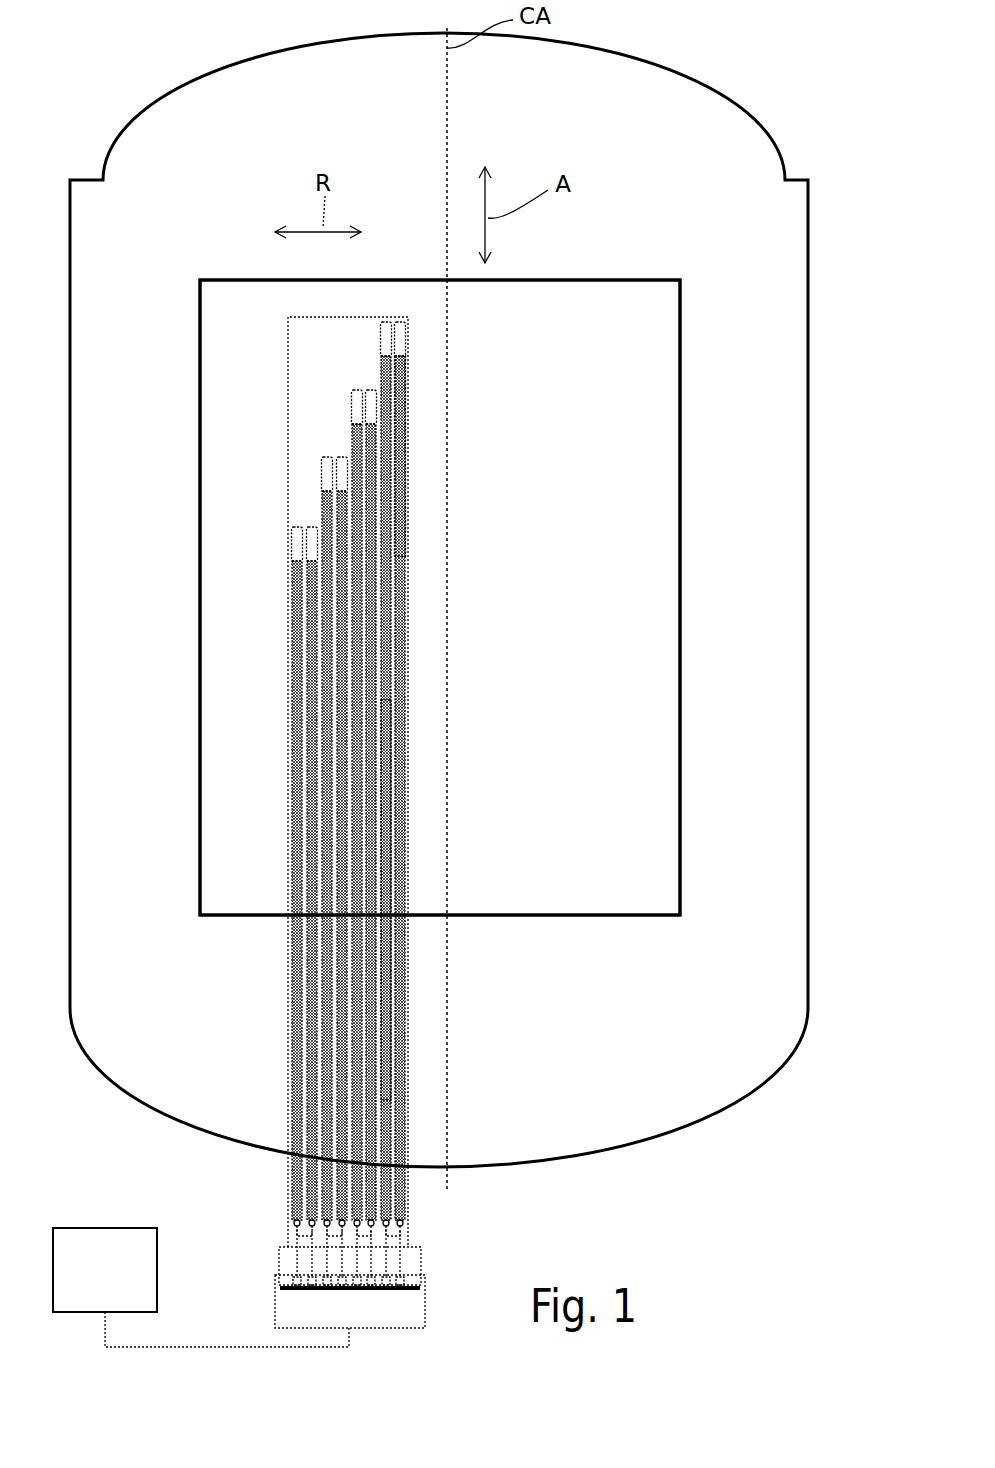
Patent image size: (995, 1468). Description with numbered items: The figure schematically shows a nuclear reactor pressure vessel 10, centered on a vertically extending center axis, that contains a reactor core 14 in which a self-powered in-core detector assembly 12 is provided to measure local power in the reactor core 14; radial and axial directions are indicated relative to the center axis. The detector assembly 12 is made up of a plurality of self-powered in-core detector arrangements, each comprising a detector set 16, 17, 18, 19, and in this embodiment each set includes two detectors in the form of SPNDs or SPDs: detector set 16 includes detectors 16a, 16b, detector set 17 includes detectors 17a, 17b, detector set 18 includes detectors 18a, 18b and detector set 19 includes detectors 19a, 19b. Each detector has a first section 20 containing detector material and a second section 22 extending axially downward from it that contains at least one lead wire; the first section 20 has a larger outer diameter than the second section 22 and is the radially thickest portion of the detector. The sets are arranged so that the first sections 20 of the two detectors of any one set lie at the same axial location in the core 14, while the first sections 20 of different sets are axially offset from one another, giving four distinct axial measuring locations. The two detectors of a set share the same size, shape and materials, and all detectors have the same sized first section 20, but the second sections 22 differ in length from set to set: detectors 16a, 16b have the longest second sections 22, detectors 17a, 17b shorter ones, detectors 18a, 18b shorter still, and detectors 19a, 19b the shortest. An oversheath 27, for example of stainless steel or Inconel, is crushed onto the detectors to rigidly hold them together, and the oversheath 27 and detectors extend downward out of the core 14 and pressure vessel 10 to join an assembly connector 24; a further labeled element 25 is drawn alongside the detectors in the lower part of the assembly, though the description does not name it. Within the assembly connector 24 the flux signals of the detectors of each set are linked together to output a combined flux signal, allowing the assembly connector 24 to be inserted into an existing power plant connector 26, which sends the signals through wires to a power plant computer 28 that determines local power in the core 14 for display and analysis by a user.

The nuclear reactor pressure vessel 10 is at (792, 98).
The self-powered in-core detector assembly 12 is at (258, 296).
The reactor core 14 is at (657, 258).
The detector set 16 is at (445, 760).
The detector 16a is at (403, 553).
The detector 16b is at (390, 525).
The detector set 17 is at (426, 765).
The detector 17a is at (375, 630).
The detector 17b is at (360, 612).
The detector set 18 is at (289, 815).
The detector 18a is at (345, 590).
The detector 18b is at (325, 612).
The detector set 19 is at (270, 854).
The detector 19a is at (310, 642).
The detector 19b is at (296, 671).
The first section 20 is at (412, 332).
The second section 22 is at (412, 418).
The assembly connector 24 is at (285, 1258).
The signal cable 25 is at (380, 750).
The power plant connector 26 is at (283, 1313).
The oversheath 27 is at (408, 683).
The power plant computer 28 is at (85, 1283).